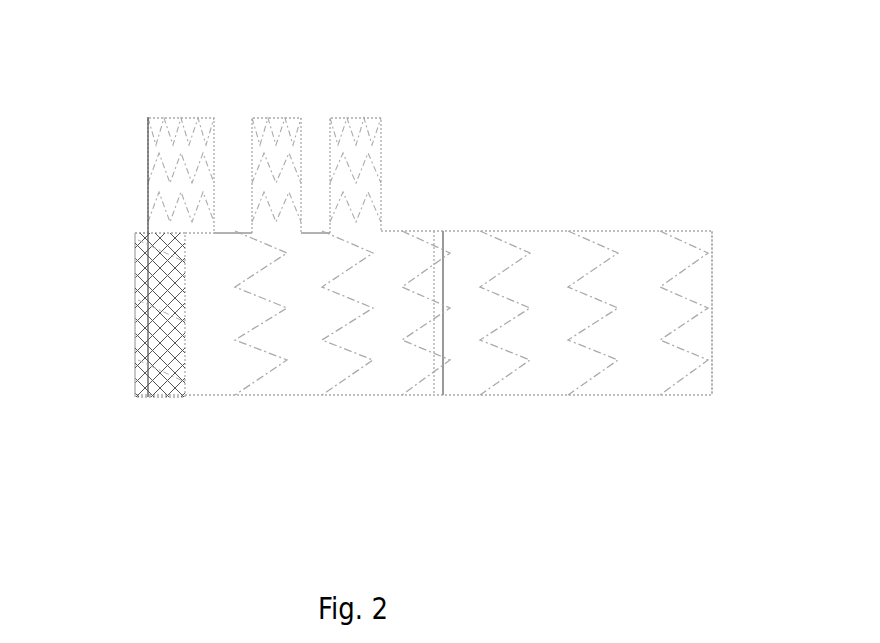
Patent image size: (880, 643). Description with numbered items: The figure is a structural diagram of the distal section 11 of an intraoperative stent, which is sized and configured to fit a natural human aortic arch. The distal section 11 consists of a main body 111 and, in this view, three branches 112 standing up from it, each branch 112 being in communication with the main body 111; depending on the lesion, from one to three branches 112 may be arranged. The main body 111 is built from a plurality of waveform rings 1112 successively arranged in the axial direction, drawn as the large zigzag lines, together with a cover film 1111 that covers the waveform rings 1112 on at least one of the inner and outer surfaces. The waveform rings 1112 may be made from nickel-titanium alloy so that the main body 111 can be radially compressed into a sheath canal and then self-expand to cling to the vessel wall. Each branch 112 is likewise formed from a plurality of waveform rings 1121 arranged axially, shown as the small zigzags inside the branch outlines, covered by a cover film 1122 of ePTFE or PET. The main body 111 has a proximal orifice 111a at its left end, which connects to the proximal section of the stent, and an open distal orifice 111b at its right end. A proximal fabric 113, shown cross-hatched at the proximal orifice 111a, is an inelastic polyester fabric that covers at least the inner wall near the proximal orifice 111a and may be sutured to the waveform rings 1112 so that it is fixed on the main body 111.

The distal section 11 is at (192, 103).
The main body 111 is at (593, 478).
The proximal orifice 111a is at (133, 285).
The distal orifice 111b is at (714, 285).
The cover film 1111 is at (538, 368).
The waveform rings 1112 is at (598, 378).
The branch 112 is at (503, 135).
The waveform rings 1121 is at (385, 163).
The cover film 1122 is at (370, 190).
The proximal fabric 113 is at (170, 398).